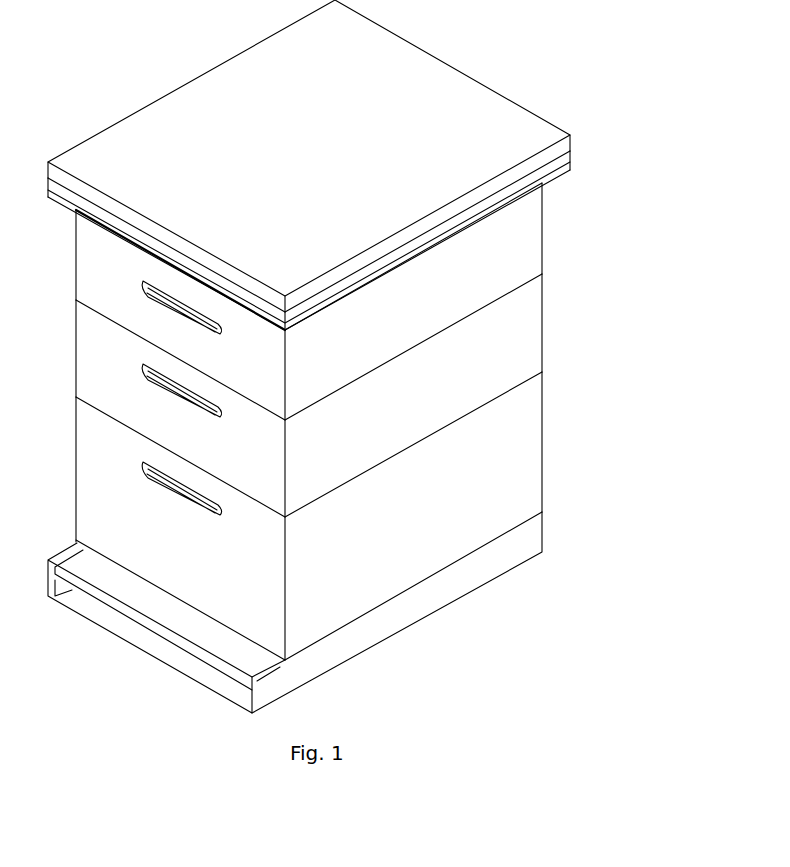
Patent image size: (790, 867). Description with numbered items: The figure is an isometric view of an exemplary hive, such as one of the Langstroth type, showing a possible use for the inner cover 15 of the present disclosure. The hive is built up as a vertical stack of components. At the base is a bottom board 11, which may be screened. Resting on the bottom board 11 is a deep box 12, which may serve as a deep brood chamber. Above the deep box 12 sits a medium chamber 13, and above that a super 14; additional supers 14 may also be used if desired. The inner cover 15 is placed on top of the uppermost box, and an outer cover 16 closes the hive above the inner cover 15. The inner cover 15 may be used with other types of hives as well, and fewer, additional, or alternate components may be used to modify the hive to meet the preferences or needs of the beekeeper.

The bottom board 11 is at (462, 572).
The deep box 12 is at (485, 495).
The medium chamber 13 is at (512, 343).
The super 14 is at (505, 250).
The inner cover 15 is at (542, 183).
The outer cover 16 is at (465, 108).